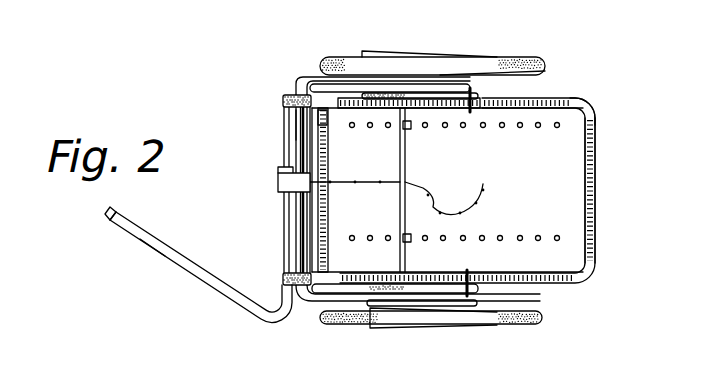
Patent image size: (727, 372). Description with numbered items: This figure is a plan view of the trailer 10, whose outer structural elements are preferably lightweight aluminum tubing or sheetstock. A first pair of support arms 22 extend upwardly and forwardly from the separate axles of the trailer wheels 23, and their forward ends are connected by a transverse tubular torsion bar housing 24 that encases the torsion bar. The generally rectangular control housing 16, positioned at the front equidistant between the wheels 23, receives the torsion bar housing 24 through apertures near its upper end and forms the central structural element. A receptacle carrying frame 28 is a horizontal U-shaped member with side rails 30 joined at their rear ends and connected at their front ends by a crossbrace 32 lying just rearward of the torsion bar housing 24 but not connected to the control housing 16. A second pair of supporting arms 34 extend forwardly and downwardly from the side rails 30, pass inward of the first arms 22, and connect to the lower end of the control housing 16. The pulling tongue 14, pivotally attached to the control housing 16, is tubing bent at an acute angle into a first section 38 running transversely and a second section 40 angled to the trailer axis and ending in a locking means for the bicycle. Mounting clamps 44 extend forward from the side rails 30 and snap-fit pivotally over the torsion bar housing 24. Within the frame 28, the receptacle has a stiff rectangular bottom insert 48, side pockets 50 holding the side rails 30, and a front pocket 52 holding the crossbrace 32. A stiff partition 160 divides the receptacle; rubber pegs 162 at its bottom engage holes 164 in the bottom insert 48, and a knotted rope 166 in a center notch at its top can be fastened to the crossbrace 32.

The trailer 10 is at (595, 183).
The pulling tongue 14 is at (142, 245).
The control housing 16 is at (278, 183).
The first pair of support arms 22 is at (312, 77).
The trailer wheels 23 is at (384, 62).
The torsion bar housing 24 is at (293, 127).
The receptacle carrying frame 28 is at (589, 100).
The side rails 30 is at (483, 108).
The crossbrace 32 is at (318, 110).
The second pair of supporting arms 34 is at (350, 90).
The first section of tongue 38 is at (290, 223).
The second section of tongue 40 is at (192, 278).
The mounting clamps 44 is at (284, 100).
The bottom insert 48 is at (536, 195).
The side pockets 50 is at (534, 99).
The front pocket 52 is at (326, 143).
The partition 160 is at (400, 215).
The rubber pegs 162 is at (412, 131).
The holes 164 is at (496, 128).
The knotted rope 166 is at (432, 188).